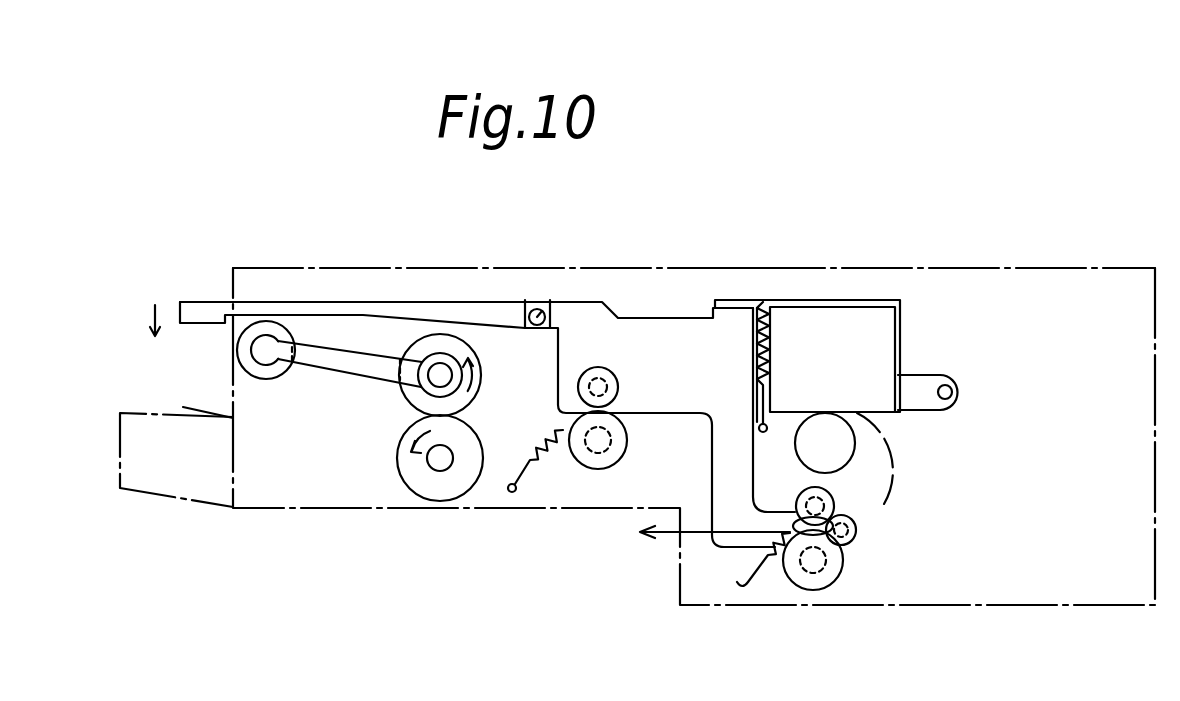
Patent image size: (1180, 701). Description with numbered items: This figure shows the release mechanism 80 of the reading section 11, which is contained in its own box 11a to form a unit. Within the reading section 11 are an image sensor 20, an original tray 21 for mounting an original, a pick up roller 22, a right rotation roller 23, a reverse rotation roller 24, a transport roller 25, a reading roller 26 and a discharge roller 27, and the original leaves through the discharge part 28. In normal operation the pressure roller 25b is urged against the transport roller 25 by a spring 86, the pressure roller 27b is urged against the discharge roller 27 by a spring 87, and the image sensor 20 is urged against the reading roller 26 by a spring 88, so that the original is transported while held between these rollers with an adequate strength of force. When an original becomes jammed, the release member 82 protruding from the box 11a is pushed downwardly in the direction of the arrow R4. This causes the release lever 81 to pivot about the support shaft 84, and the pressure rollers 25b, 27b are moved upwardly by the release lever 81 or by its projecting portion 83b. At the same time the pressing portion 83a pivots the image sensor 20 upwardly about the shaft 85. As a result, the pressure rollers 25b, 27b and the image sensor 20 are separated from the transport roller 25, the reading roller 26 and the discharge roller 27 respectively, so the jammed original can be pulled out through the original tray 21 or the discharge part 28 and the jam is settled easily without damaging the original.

The reading section 11 is at (694, 392).
The box 11a is at (902, 268).
The image sensor 20 is at (865, 338).
The original tray 21 is at (167, 497).
The pick up roller 22 is at (277, 323).
The right rotation roller 23 is at (428, 343).
The reverse rotation roller 24 is at (420, 495).
The transport roller 25 is at (627, 447).
The pressure roller 25b is at (592, 367).
The reading roller 26 is at (857, 447).
The discharge roller 27 is at (812, 590).
The pressure roller 27b is at (837, 502).
The discharge part 28 is at (613, 537).
The release mechanism 80 is at (754, 266).
The release lever 81 is at (613, 293).
The release member 82 is at (180, 303).
The pressing portion 83a is at (724, 320).
The projecting portion 83b is at (860, 532).
The support shaft 84 is at (545, 307).
The shaft 85 is at (958, 388).
The spring 86 is at (552, 452).
The spring 87 is at (772, 557).
The spring 88 is at (768, 350).
The arrow R4 is at (132, 322).